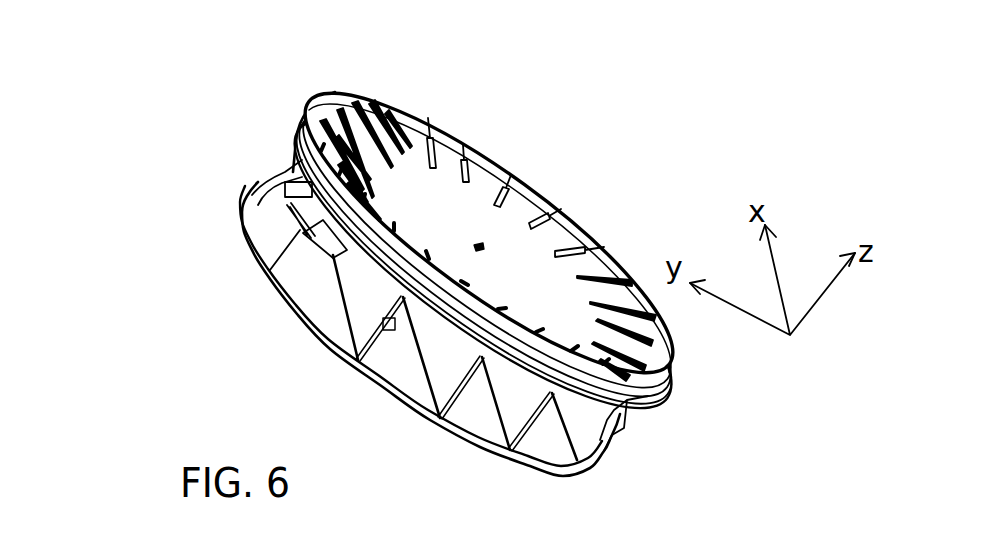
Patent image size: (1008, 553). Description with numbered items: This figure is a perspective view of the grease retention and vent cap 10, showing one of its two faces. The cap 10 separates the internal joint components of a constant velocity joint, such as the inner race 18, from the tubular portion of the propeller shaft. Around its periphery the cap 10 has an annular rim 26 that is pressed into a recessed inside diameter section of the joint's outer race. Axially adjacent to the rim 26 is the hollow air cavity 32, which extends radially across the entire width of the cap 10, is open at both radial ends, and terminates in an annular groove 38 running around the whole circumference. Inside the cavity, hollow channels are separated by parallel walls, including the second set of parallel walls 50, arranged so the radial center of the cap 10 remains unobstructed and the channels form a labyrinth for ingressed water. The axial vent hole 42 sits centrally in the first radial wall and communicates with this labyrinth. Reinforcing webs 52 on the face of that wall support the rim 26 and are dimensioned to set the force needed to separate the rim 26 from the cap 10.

The cap 10 is at (227, 167).
The inner race 18 is at (450, 207).
The annular rim 26 is at (613, 410).
The hollow air cavity 32 is at (398, 352).
The annular groove 38 is at (305, 232).
The axial vent hole 42 is at (485, 245).
The second set of parallel walls 50 is at (535, 438).
The reinforcing webs 52 is at (613, 273).